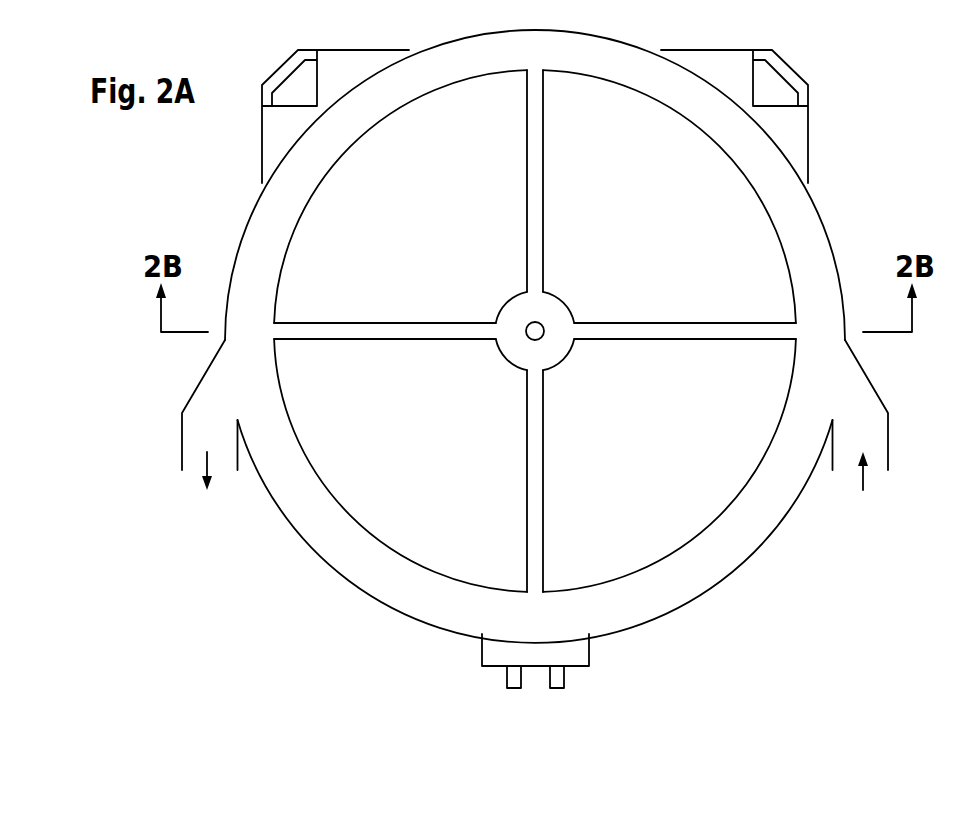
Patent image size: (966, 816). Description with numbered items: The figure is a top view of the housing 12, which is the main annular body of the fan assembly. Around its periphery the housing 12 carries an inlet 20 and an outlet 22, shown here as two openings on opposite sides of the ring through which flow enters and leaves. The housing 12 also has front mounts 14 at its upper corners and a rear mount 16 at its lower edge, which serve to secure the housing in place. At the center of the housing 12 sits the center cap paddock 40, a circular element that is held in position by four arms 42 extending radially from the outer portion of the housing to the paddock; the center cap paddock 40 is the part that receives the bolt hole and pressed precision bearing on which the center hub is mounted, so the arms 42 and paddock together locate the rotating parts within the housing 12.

The housing 12 is at (262, 222).
The front mounts 14 is at (287, 65).
The rear mount 16 is at (586, 681).
The inlet 20 is at (862, 486).
The outlet 22 is at (206, 486).
The center cap paddock 40 is at (552, 308).
The arms 42 is at (535, 157).